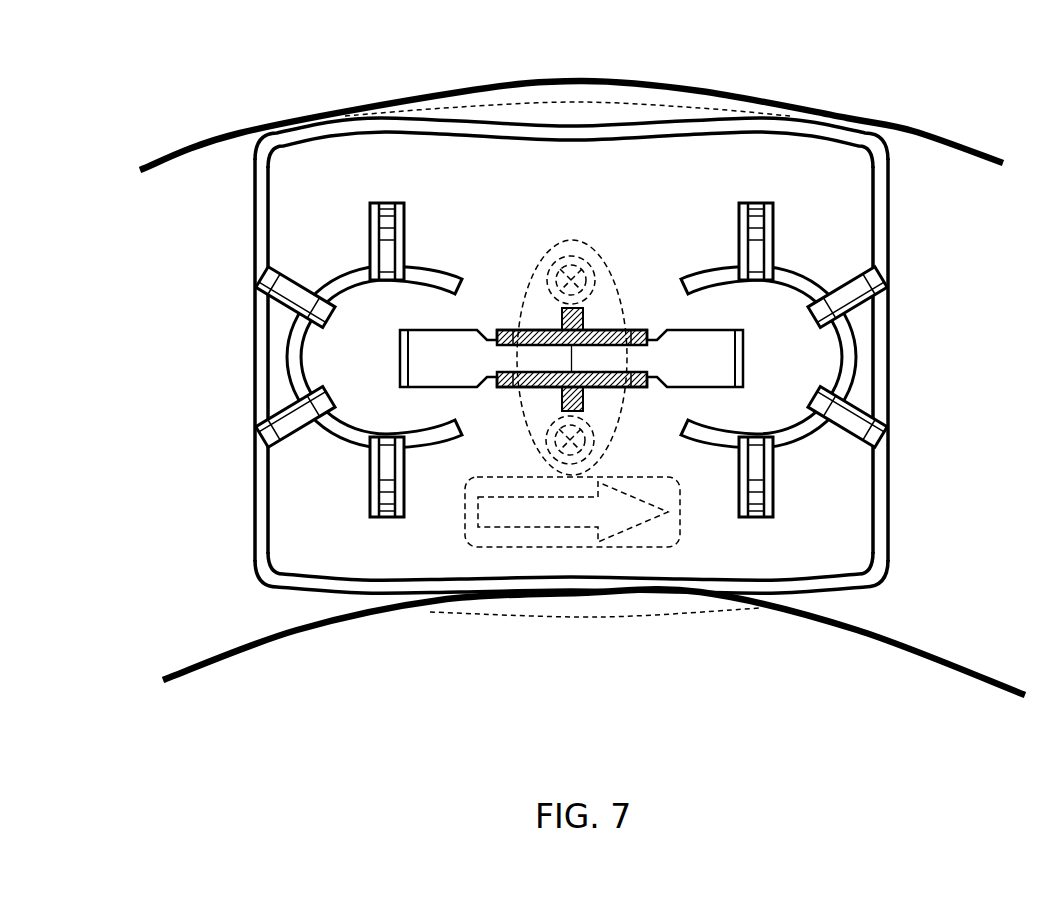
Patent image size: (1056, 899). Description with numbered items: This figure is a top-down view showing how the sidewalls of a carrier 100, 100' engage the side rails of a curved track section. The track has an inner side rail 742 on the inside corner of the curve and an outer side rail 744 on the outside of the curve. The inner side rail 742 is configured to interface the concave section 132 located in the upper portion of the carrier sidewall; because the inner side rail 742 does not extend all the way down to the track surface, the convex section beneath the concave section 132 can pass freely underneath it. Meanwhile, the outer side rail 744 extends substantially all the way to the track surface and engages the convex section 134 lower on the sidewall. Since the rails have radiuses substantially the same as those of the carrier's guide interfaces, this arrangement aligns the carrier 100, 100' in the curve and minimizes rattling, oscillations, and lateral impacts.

The carrier 100 is at (466, 355).
The carrier 100' is at (570, 356).
The concave section 132 is at (557, 582).
The convex section 134 is at (593, 102).
The inner side rail 742 is at (230, 655).
The outer side rail 744 is at (905, 120).